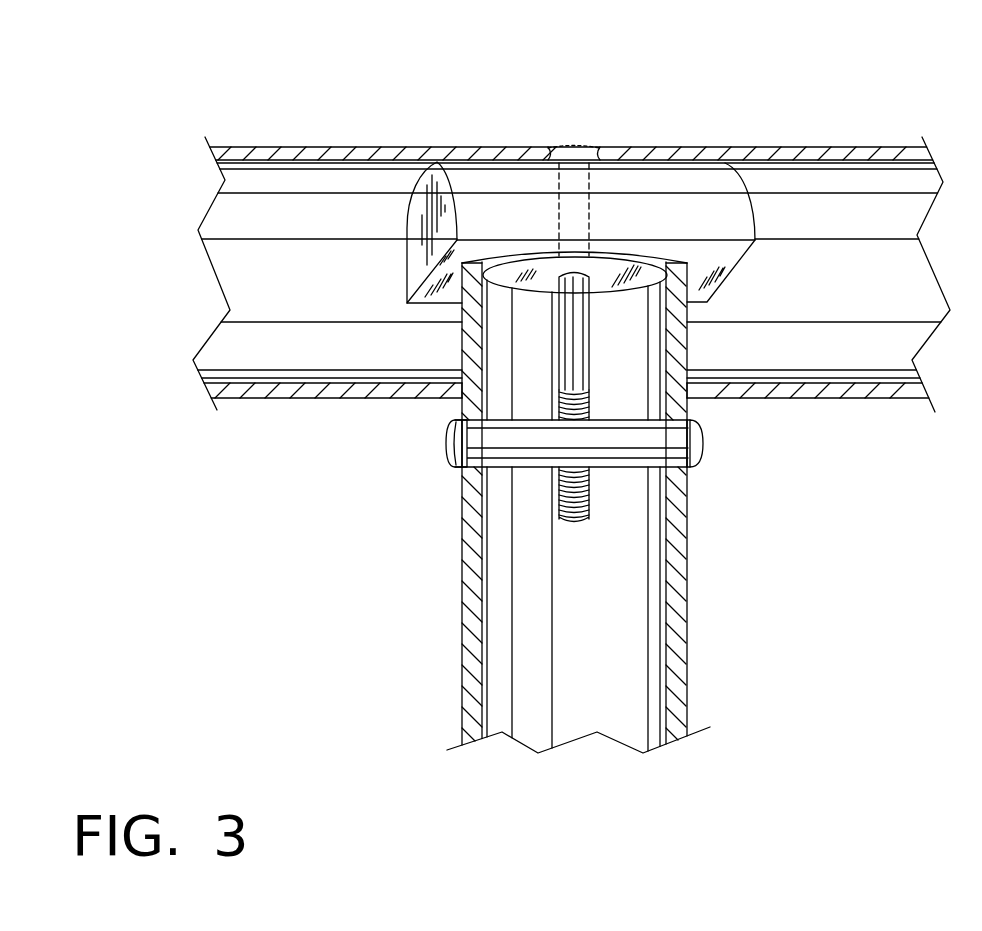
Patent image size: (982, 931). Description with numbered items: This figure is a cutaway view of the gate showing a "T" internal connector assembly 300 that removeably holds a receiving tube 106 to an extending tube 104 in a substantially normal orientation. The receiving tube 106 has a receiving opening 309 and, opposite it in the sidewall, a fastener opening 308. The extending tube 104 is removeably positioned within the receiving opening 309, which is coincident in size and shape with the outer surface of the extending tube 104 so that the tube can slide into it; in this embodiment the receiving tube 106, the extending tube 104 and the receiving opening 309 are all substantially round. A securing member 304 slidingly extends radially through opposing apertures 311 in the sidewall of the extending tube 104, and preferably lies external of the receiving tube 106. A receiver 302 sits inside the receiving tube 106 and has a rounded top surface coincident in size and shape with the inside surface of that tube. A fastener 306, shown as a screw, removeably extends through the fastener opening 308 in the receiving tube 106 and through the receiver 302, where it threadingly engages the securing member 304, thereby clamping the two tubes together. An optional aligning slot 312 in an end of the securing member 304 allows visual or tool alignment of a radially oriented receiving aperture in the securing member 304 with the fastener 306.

The extending tube 104 is at (680, 698).
The receiving tube 106 is at (863, 148).
The "T" internal connector assembly 300 is at (722, 133).
The receiver 302 is at (492, 172).
The securing member 304 is at (680, 442).
The fastener 306 is at (583, 202).
The fastener opening 308 is at (538, 150).
The receiving opening 309 is at (683, 390).
The opposing apertures 311 is at (460, 413).
The aligning slot 312 is at (447, 445).